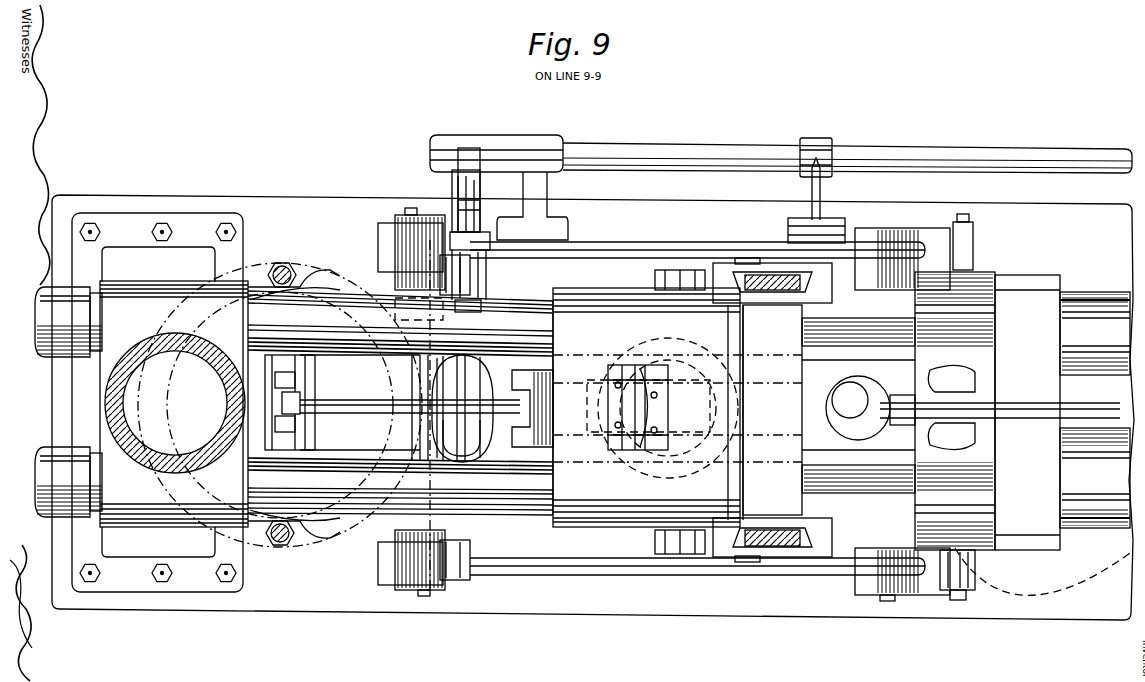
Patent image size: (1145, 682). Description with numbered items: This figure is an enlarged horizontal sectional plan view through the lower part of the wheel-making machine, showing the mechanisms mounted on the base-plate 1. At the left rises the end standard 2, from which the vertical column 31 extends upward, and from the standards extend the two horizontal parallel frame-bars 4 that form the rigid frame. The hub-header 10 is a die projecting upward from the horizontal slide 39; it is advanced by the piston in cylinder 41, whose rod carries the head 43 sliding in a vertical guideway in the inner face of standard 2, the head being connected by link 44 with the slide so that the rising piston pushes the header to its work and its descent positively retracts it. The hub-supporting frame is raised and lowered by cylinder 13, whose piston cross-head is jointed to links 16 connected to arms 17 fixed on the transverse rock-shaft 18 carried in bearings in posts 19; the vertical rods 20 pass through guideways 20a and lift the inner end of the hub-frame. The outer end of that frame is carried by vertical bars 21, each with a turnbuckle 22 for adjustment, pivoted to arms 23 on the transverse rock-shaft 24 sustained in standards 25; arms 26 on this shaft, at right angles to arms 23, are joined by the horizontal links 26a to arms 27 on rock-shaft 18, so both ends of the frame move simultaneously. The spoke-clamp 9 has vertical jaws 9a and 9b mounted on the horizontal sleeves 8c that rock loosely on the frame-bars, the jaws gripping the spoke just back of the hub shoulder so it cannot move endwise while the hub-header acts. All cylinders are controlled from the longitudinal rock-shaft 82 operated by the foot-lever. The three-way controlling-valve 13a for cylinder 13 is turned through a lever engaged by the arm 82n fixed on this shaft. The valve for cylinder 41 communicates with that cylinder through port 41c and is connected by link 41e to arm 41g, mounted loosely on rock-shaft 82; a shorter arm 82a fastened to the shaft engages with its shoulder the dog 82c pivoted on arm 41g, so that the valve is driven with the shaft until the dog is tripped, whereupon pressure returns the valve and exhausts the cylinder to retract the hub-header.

The base-plate 1 is at (824, 630).
The standard 2 is at (157, 402).
The frame-bars 4 is at (318, 318).
The sleeves 8c is at (1096, 405).
The spoke-clamp 9 is at (951, 411).
The jaw 9a is at (985, 282).
The jaw 9b is at (972, 540).
The hub-header 10 is at (860, 420).
The cylinder 13 is at (737, 440).
The controlling-valve 13a is at (816, 230).
The links 16 is at (652, 280).
The arms 17 is at (858, 406).
The rock-shaft 18 is at (898, 378).
The posts 19 is at (870, 242).
The vertical rods 20 is at (762, 262).
The guideways 20a is at (735, 262).
The vertical bars 21 is at (282, 262).
The turnbuckle 22 is at (294, 268).
The arms 23 is at (356, 298).
The rock-shaft 24 is at (338, 404).
The standards 25 is at (390, 243).
The arms 26 is at (415, 285).
The horizontal links 26a is at (590, 248).
The arms 27 is at (925, 318).
The vertical column 31 is at (104, 404).
The slide 39 is at (438, 405).
The cylinder 41 is at (364, 407).
The port 41c is at (491, 415).
The link 41e is at (470, 216).
The arm 41g is at (460, 182).
The head 43 is at (258, 404).
The link 44 is at (305, 432).
The rock-shaft 82 is at (781, 183).
The arm 82a is at (476, 153).
The dog 82c is at (480, 222).
The arm 82n is at (826, 190).